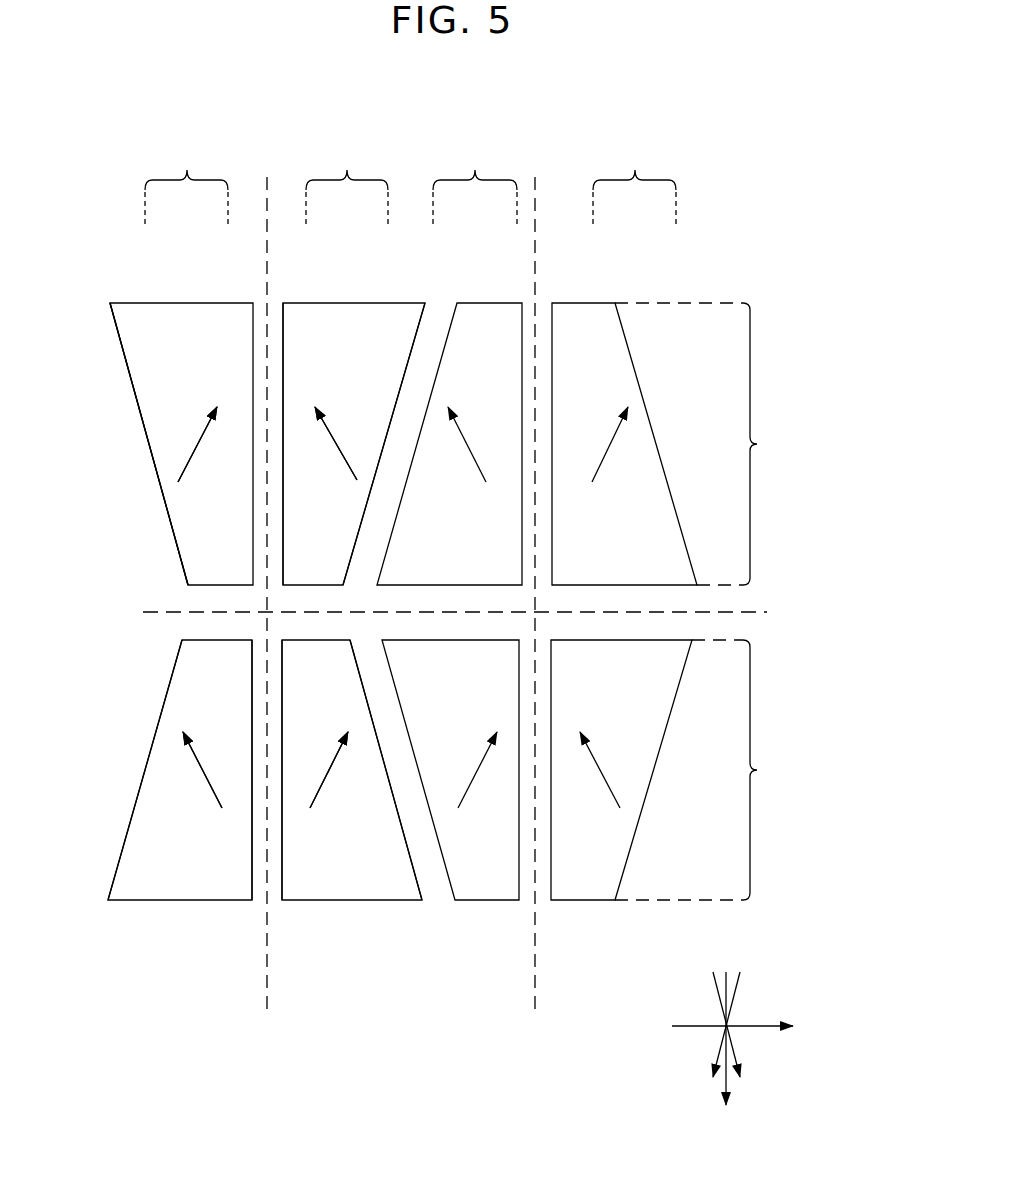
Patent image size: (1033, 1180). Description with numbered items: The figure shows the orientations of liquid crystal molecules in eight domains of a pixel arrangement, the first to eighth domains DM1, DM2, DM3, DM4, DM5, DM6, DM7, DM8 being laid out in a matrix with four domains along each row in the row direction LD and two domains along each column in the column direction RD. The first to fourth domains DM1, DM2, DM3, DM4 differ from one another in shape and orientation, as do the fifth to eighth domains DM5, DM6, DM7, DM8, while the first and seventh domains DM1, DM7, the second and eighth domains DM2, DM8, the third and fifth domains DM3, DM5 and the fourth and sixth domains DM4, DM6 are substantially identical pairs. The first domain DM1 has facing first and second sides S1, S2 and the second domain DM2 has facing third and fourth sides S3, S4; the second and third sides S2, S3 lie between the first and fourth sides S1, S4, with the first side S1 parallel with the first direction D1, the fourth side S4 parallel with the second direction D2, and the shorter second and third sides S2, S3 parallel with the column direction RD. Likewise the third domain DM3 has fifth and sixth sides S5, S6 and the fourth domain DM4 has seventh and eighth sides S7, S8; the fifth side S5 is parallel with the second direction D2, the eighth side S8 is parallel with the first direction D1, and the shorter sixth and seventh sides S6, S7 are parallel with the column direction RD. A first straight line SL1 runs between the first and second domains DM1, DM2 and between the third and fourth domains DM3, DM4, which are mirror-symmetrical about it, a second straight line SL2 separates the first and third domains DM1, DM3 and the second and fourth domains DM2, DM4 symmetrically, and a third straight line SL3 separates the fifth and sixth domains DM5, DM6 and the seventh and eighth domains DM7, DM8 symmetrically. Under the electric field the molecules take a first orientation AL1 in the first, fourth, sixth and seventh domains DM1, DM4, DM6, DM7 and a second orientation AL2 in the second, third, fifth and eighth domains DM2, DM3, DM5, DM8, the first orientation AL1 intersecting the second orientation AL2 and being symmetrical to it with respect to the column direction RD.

The first domain DM1 is at (193, 522).
The second domain DM2 is at (301, 522).
The third domain DM3 is at (171, 869).
The fourth domain DM4 is at (321, 869).
The fifth domain DM5 is at (438, 522).
The sixth domain DM6 is at (593, 522).
The seventh domain DM7 is at (463, 869).
The eighth domain DM8 is at (571, 869).
The first side S1 is at (173, 531).
The second side S2 is at (253, 380).
The third side S3 is at (283, 338).
The fourth side S4 is at (415, 339).
The fifth side S5 is at (175, 666).
The sixth side S6 is at (252, 740).
The seventh side S7 is at (282, 887).
The eighth side S8 is at (420, 893).
The first orientation AL1 is at (204, 432).
The second orientation AL2 is at (334, 440).
The first straight line SL1 is at (262, 608).
The second straight line SL2 is at (472, 612).
The third straight line SL3 is at (532, 608).
The row direction LD is at (746, 1026).
The column direction RD is at (727, 1088).
The first direction D1 is at (735, 1060).
The second direction D2 is at (717, 1060).